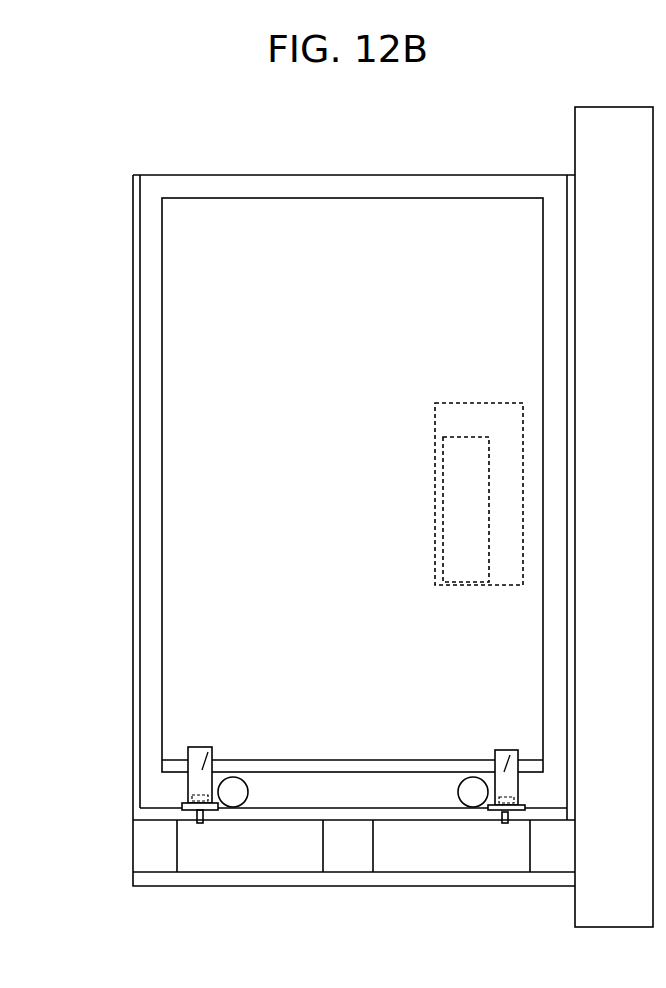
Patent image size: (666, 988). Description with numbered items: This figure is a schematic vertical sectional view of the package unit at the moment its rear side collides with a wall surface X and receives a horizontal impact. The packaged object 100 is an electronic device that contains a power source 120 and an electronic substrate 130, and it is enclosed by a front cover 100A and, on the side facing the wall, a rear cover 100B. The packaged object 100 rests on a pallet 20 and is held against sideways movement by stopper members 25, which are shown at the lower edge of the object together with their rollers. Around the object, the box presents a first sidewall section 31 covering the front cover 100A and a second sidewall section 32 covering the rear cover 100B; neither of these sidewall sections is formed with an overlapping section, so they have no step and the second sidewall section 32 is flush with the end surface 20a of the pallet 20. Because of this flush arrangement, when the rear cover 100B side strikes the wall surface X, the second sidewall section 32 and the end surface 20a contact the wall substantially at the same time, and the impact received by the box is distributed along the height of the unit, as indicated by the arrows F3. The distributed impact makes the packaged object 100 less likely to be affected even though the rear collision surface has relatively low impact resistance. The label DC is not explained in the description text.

The packaged object 100 is at (237, 238).
The front cover 100A is at (158, 460).
The rear cover 100B is at (552, 334).
The power source 120 is at (467, 425).
The electronic substrate 130 is at (467, 530).
The pallet 20 is at (128, 820).
The end surface 20a is at (583, 850).
The stopper member 25 is at (217, 752).
The first sidewall section 31 is at (138, 280).
The second sidewall section 32 is at (573, 208).
The wall surface X is at (575, 135).
The arrows F3 is at (567, 224).
The direction label DC is at (15, 326).